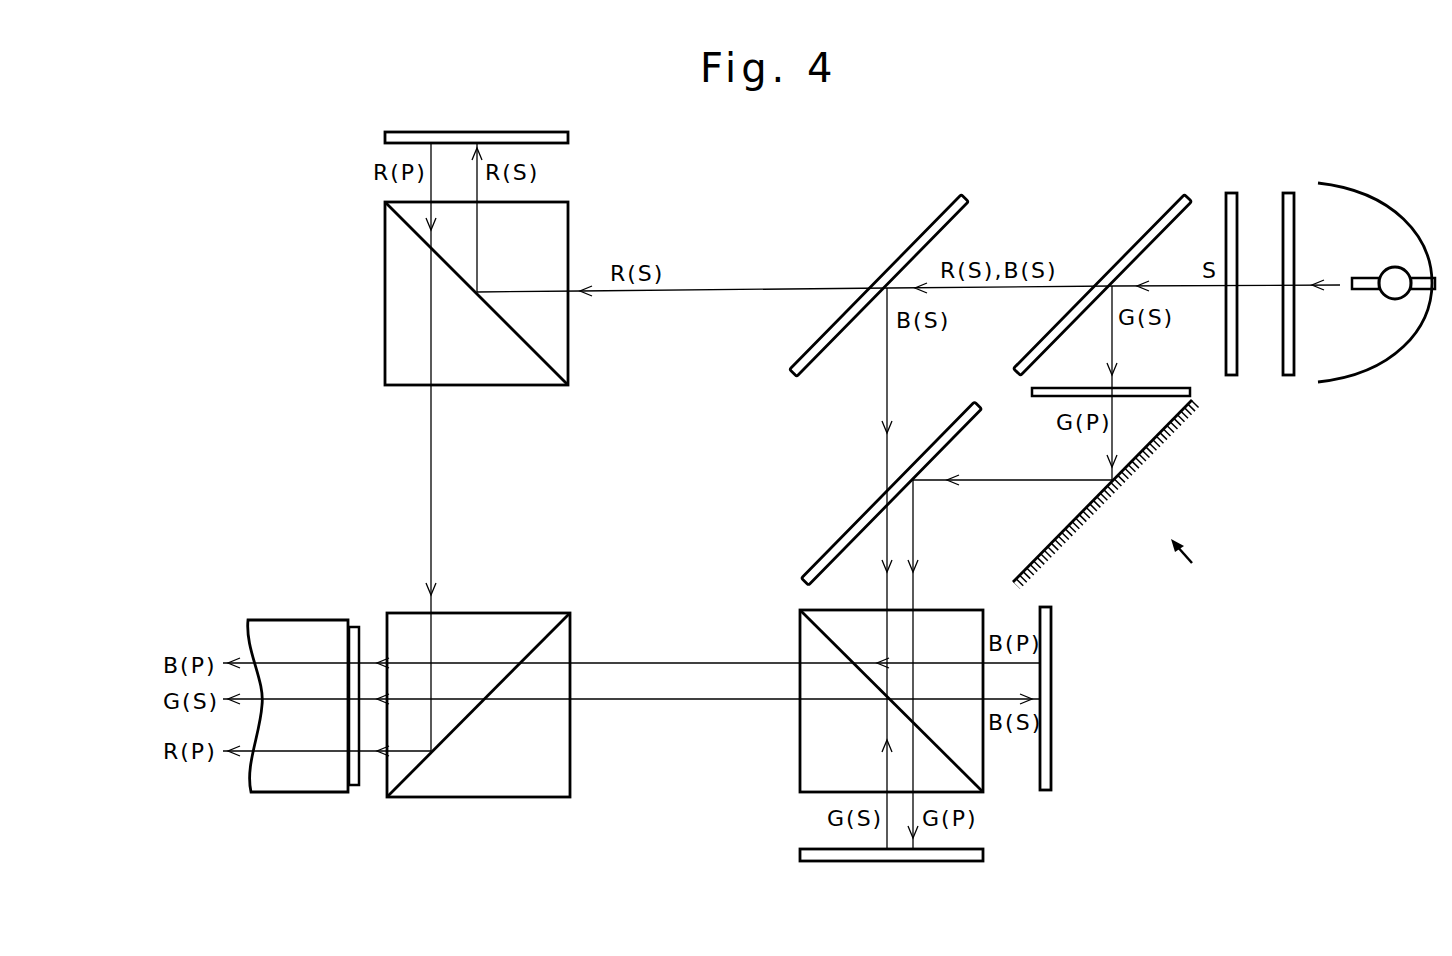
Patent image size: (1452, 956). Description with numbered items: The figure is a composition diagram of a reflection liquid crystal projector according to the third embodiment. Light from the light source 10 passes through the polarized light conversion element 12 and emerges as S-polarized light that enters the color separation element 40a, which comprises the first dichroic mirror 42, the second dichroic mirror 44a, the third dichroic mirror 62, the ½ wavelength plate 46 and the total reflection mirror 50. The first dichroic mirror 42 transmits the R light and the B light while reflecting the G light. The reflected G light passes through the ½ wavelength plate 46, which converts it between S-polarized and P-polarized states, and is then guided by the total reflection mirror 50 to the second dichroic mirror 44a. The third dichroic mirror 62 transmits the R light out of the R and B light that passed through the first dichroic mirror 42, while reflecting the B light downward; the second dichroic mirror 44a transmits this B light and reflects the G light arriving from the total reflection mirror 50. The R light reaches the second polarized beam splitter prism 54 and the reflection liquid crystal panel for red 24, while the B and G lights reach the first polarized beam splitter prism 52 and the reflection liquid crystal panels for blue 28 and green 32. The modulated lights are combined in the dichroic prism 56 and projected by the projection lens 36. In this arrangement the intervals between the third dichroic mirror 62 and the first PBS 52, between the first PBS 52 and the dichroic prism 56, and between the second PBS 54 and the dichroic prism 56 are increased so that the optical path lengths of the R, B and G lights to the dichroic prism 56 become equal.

The light source 10 is at (1362, 193).
The polarized light conversion element 12 is at (1300, 190).
The reflection liquid crystal panel for red 24 is at (552, 137).
The reflection liquid crystal panel for blue 28 is at (1045, 678).
The reflection liquid crystal panel for green 32 is at (975, 853).
The projection lens 36 is at (318, 640).
The color separation element 40a is at (1207, 562).
The first dichroic mirror 42 is at (1177, 208).
The second dichroic mirror 44a is at (880, 512).
The ½ wavelength plate 46 is at (1135, 390).
The total reflection mirror 50 is at (1150, 447).
The first polarized beam splitter prism 52 is at (818, 642).
The second polarized beam splitter prism 54 is at (552, 222).
The dichroic prism 56 is at (523, 640).
The third dichroic mirror 62 is at (957, 208).